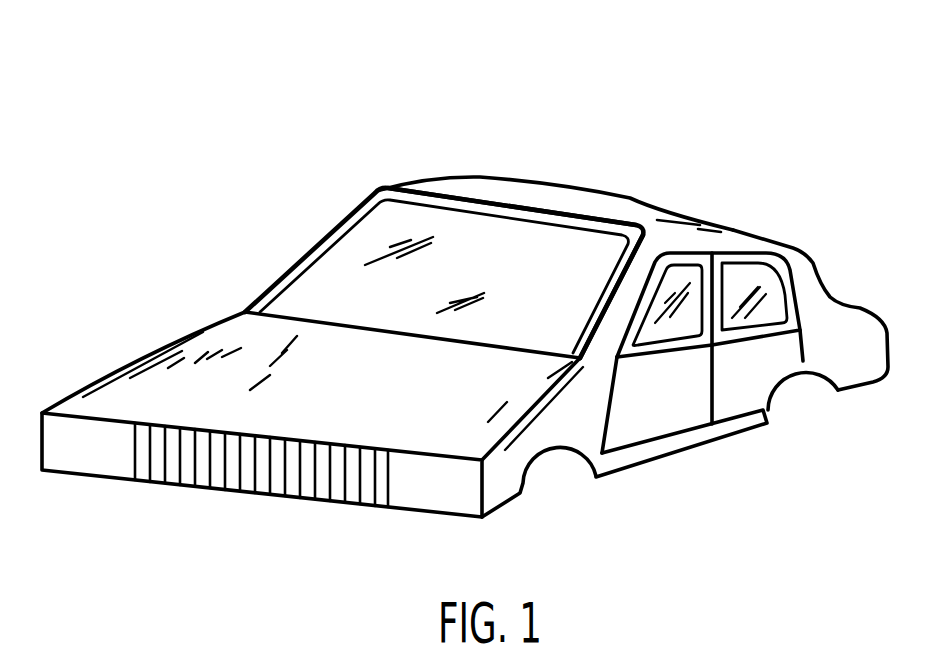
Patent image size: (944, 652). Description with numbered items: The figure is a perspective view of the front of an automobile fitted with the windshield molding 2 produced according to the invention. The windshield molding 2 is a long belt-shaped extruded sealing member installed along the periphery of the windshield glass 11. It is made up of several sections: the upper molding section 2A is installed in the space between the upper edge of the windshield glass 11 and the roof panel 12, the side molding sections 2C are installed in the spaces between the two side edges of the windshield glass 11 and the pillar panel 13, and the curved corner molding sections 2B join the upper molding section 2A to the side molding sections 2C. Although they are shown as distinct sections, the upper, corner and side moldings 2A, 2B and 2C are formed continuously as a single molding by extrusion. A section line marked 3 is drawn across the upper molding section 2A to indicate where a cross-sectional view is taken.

The windshield molding 2 is at (403, 189).
The upper molding section 2A is at (447, 193).
The curved corner molding section 2B is at (655, 222).
The side molding section 2C is at (603, 293).
The section line for FIG. 3 is at (553, 113).
The windshield glass 11 is at (368, 253).
The roof panel 12 is at (634, 226).
The pillar panel 13 is at (608, 350).